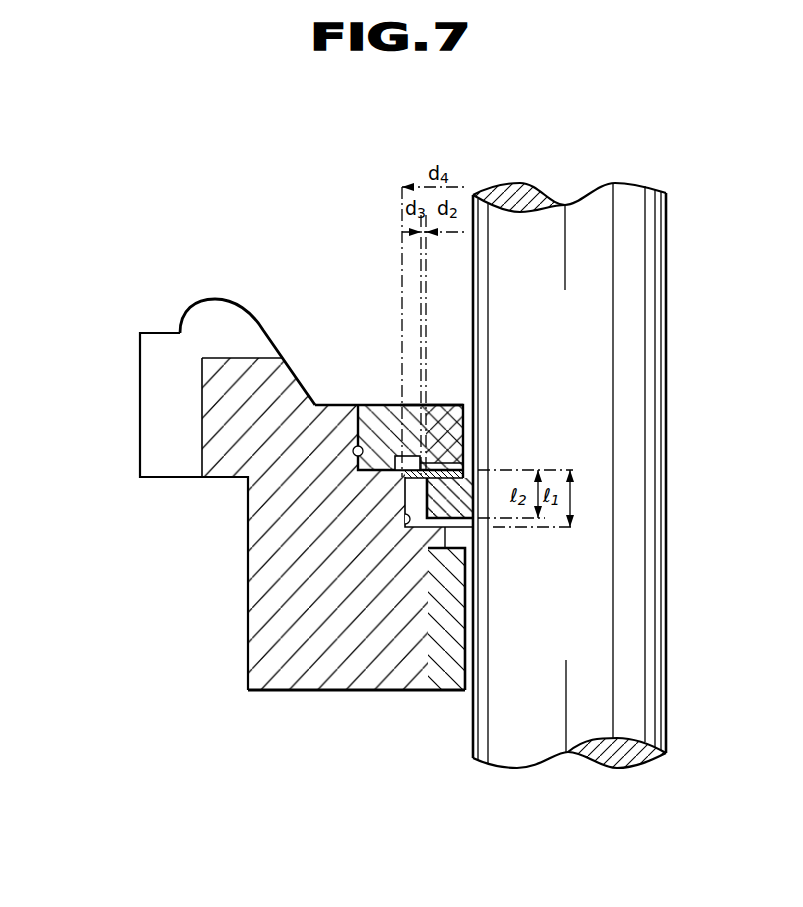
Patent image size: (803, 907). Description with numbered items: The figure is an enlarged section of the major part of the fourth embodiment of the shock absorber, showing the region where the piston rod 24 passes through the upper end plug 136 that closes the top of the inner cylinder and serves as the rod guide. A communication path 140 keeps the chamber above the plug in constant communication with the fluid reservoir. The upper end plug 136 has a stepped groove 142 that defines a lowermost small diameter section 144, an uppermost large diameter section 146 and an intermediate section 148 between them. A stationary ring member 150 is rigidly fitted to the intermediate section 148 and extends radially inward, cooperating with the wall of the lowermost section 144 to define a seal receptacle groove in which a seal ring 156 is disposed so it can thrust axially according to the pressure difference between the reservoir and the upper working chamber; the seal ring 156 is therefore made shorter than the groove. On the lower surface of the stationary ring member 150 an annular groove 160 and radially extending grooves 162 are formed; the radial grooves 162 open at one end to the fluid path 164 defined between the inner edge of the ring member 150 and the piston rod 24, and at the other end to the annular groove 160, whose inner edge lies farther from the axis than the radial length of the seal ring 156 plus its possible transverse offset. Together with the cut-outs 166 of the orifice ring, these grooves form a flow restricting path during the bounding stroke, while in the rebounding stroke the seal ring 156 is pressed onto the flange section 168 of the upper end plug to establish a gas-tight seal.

The piston rod 24 is at (650, 333).
The upper end plug 136 is at (262, 614).
The communication path 140 is at (150, 455).
The stepped groove 142 is at (342, 275).
The lowermost small diameter section 144 is at (404, 516).
The uppermost large diameter section 146 is at (275, 358).
The intermediate section 148 is at (353, 452).
The stationary ring member 150 is at (455, 428).
The seal ring 156 is at (462, 513).
The annular groove 160 is at (432, 462).
The radially extending grooves 162 is at (455, 405).
The fluid path 164 is at (466, 450).
The cut-outs 166 is at (403, 477).
The flange section 168 is at (447, 532).